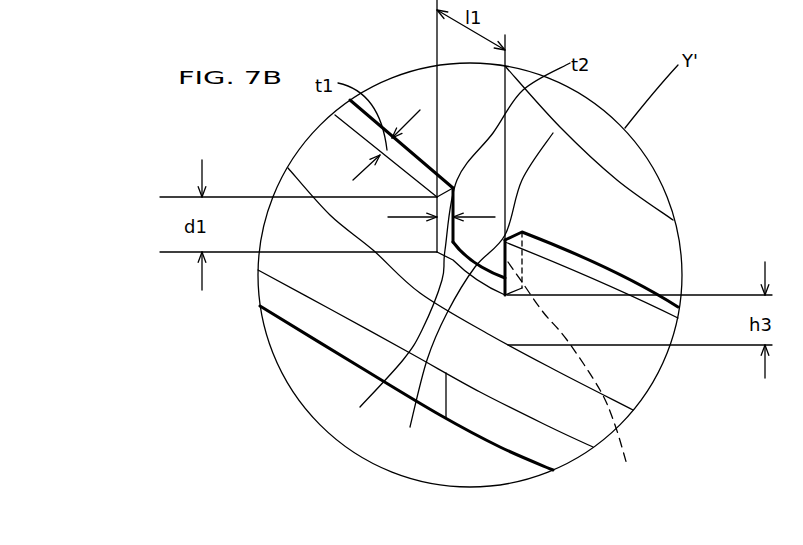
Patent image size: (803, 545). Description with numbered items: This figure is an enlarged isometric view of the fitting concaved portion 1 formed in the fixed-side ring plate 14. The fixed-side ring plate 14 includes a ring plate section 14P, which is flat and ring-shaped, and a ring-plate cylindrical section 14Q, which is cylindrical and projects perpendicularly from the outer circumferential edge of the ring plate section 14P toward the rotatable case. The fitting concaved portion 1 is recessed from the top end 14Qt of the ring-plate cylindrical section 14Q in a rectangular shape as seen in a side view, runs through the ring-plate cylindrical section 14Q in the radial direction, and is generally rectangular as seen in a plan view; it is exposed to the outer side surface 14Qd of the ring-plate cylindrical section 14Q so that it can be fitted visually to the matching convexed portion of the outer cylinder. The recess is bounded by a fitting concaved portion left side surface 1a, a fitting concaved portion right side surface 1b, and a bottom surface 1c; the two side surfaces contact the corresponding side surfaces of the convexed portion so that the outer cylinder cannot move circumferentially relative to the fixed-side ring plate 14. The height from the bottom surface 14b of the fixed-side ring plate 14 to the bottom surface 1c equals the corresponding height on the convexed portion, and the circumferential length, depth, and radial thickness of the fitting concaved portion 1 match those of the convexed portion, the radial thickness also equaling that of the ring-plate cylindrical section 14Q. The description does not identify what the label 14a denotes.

The fitting concaved portion 1 is at (470, 288).
The fitting concaved portion left side surface 1a is at (360, 407).
The fitting concaved portion right side surface 1b is at (575, 377).
The bottom surface of the fitting concaved portion 1c is at (553, 133).
The fixed-side ring plate 14 is at (484, 307).
The fin plate portion 14a is at (605, 235).
The bottom surface of the fixed-side ring plate 14b is at (330, 278).
The ring plate section 14P is at (353, 339).
The ring-plate cylindrical section 14Q is at (602, 355).
The top end of the ring-plate cylindrical section 14Qt is at (648, 287).
The outer side surface of the ring-plate cylindrical section 14Qd is at (648, 355).